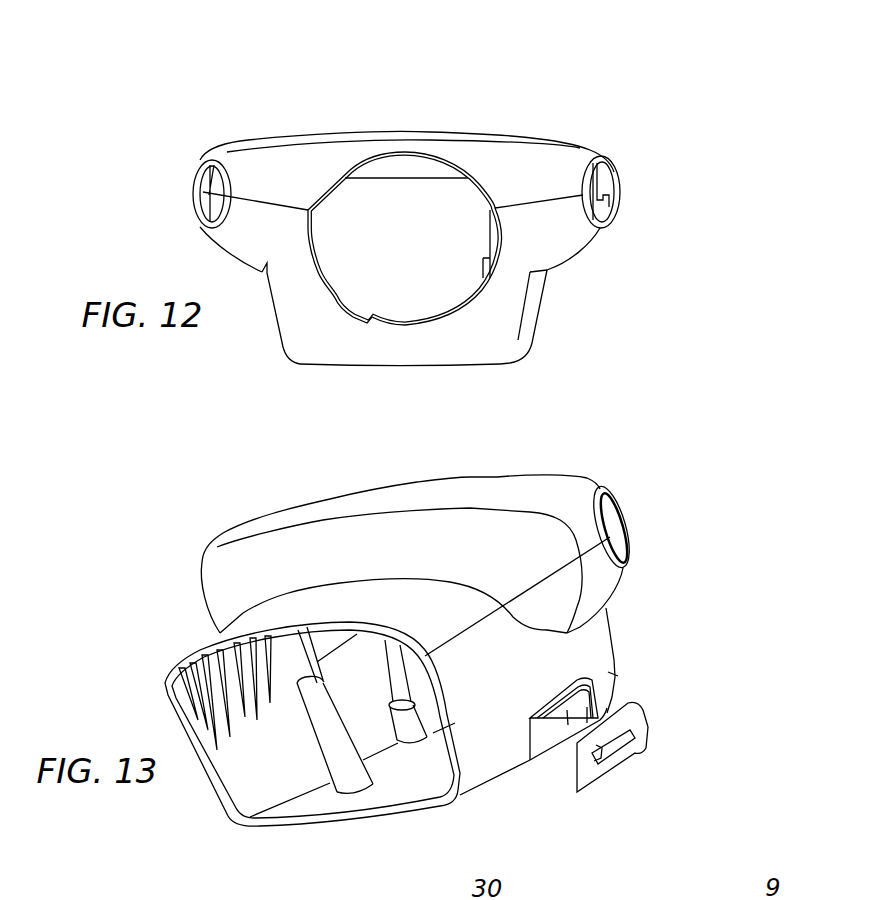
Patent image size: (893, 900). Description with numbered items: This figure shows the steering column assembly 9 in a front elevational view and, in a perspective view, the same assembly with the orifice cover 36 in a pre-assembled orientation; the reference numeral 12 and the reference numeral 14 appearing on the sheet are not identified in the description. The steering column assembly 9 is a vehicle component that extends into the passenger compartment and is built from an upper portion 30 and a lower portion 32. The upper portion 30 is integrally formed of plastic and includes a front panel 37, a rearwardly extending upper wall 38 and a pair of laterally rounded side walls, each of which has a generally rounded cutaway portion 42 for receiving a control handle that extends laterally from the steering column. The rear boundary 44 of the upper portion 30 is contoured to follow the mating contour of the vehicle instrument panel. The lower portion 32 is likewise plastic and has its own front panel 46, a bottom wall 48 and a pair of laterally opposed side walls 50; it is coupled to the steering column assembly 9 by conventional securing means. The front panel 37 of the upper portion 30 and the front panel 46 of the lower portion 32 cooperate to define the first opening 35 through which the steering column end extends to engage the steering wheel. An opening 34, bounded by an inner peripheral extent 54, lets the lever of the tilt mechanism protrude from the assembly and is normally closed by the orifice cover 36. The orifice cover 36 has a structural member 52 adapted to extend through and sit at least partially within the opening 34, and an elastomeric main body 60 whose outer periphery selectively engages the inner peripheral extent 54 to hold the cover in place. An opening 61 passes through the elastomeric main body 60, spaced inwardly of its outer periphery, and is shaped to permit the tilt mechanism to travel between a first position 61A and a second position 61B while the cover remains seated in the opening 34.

In FIG. 12, the steering column assembly 9 is at (587, 74).
In FIG. 13, the steering column assembly 9 is at (662, 437).
In FIG. 13, the brush head 12 is at (392, 795).
In FIG. 12, the housing wall 14 is at (510, 330).
In FIG. 13, the housing wall 14 is at (612, 617).
In FIG. 12, the upper portion 30 is at (237, 140).
In FIG. 13, the upper portion 30 is at (415, 478).
In FIG. 12, the lower portion 32 is at (575, 264).
In FIG. 13, the lower portion 32 is at (618, 677).
In FIG. 13, the opening 34 is at (545, 734).
In FIG. 12, the first opening 35 is at (343, 238).
In FIG. 13, the orifice cover 36 is at (642, 716).
In FIG. 12, the front panel 37 is at (558, 170).
In FIG. 12, the upper wall 38 is at (428, 130).
In FIG. 13, the upper wall 38 is at (267, 618).
In FIG. 12, the rounded cutaway portion 42 is at (203, 190).
In FIG. 13, the rounded cutaway portion 42 is at (609, 505).
In FIG. 13, the rear boundary 44 is at (165, 678).
In FIG. 12, the front panel 46 is at (293, 330).
In FIG. 12, the bottom wall 48 is at (327, 367).
In FIG. 13, the bottom wall 48 is at (280, 828).
In FIG. 12, the side walls 50 is at (530, 300).
In FIG. 13, the side walls 50 is at (627, 582).
In FIG. 13, the structural member 52 is at (586, 778).
In FIG. 13, the inner peripheral extent 54 is at (616, 668).
In FIG. 13, the elastomeric main body 60 is at (636, 752).
In FIG. 13, the opening 61 is at (604, 763).
In FIG. 13, the first position 61A is at (556, 717).
In FIG. 13, the second position 61B is at (636, 737).